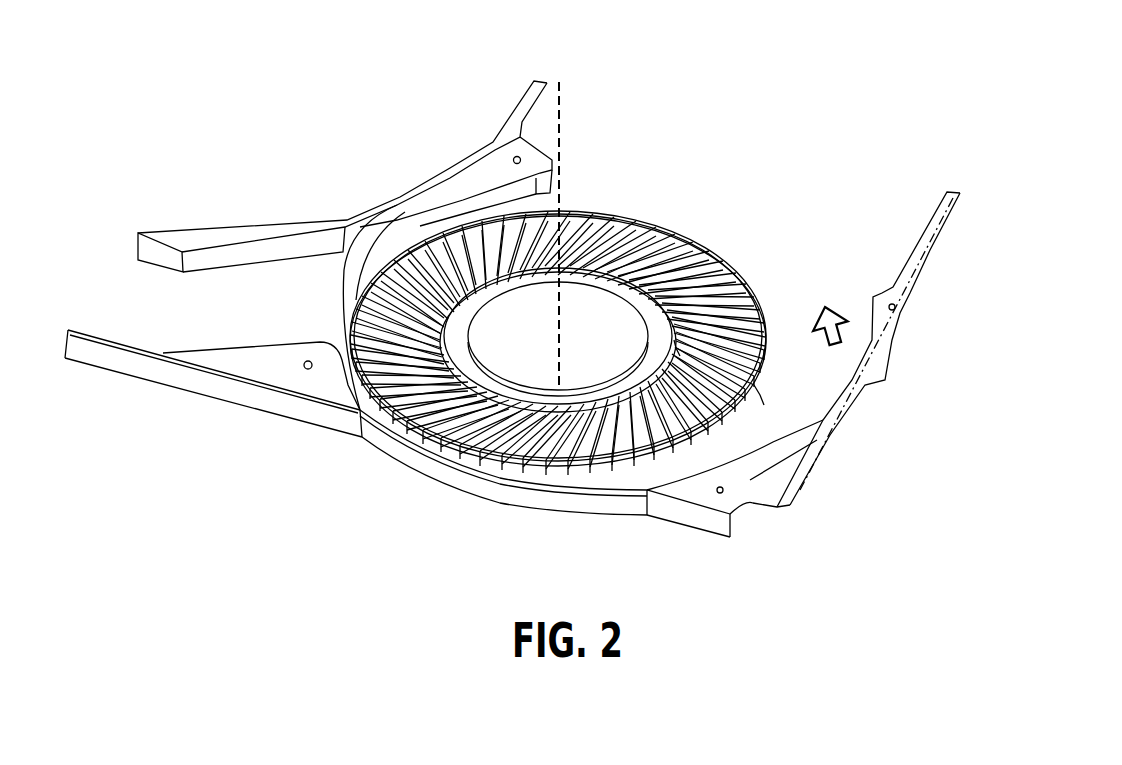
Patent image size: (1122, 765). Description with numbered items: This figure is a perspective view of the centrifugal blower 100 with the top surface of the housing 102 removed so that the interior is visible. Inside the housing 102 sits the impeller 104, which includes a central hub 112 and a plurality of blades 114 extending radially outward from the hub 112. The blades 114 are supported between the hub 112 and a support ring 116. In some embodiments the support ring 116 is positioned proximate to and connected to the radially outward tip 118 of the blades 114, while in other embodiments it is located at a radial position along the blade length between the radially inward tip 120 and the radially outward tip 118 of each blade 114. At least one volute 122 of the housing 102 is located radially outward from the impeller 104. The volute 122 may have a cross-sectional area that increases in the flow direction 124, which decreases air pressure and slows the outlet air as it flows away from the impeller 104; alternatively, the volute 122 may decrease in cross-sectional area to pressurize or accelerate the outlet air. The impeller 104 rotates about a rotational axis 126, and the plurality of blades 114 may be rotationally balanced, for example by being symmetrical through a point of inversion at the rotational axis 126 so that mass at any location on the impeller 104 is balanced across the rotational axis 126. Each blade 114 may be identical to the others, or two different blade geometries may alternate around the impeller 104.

The centrifugal blower 100 is at (820, 99).
The housing 102 is at (897, 315).
The impeller 104 is at (372, 296).
The hub 112 is at (638, 305).
The blades 114 is at (713, 272).
The support ring 116 is at (805, 285).
The radially outward tip 118 is at (760, 395).
The radially inward tip 120 is at (680, 350).
The volute 122 is at (806, 387).
The flow direction 124 is at (841, 334).
The rotational axis 126 is at (560, 130).